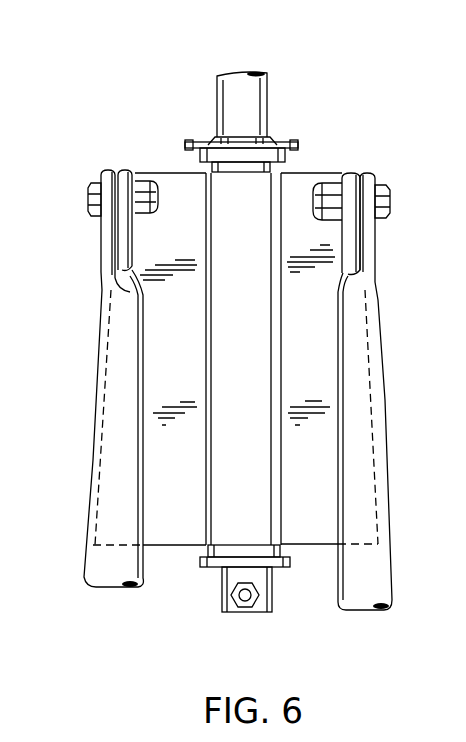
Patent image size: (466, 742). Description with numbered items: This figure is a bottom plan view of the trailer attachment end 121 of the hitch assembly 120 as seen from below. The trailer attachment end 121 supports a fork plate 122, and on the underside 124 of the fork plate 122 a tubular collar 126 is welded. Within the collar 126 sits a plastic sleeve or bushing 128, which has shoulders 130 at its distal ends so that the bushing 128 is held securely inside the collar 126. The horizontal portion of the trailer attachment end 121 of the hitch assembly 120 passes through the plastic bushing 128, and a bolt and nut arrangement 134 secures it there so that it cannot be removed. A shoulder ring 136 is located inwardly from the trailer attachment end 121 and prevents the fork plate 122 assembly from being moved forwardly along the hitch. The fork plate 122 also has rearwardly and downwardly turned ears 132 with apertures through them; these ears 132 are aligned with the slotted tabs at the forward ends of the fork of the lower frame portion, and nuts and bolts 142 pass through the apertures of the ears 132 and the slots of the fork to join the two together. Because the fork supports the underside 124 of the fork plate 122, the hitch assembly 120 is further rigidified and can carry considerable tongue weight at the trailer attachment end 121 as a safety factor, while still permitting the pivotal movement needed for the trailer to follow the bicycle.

The hitch assembly 120 is at (341, 89).
The trailer attachment end 121 is at (227, 112).
The fork plate 122 is at (157, 546).
The underside 124 is at (178, 541).
The tubular collar 126 is at (281, 522).
The plastic sleeve or bushing 128 is at (277, 168).
The shoulders 130 is at (200, 157).
The ears 132 is at (128, 170).
The bolt and nut arrangement 134 is at (249, 606).
The shoulder ring 136 is at (288, 142).
The nuts and bolts 142 is at (87, 208).